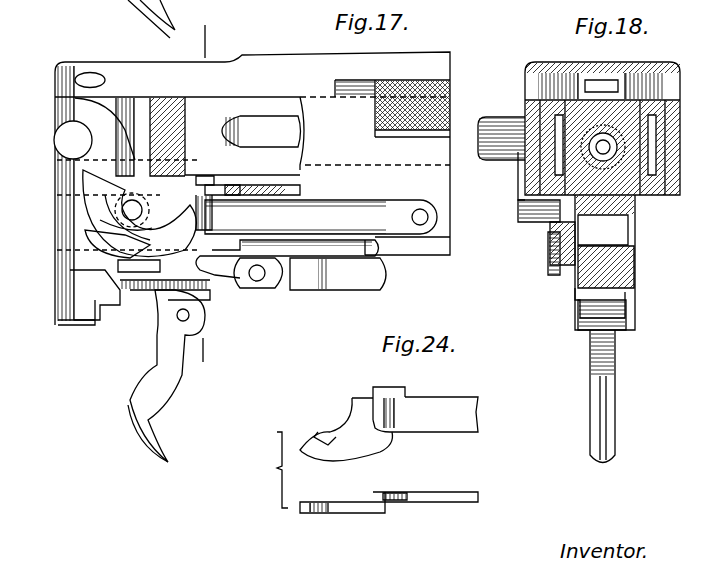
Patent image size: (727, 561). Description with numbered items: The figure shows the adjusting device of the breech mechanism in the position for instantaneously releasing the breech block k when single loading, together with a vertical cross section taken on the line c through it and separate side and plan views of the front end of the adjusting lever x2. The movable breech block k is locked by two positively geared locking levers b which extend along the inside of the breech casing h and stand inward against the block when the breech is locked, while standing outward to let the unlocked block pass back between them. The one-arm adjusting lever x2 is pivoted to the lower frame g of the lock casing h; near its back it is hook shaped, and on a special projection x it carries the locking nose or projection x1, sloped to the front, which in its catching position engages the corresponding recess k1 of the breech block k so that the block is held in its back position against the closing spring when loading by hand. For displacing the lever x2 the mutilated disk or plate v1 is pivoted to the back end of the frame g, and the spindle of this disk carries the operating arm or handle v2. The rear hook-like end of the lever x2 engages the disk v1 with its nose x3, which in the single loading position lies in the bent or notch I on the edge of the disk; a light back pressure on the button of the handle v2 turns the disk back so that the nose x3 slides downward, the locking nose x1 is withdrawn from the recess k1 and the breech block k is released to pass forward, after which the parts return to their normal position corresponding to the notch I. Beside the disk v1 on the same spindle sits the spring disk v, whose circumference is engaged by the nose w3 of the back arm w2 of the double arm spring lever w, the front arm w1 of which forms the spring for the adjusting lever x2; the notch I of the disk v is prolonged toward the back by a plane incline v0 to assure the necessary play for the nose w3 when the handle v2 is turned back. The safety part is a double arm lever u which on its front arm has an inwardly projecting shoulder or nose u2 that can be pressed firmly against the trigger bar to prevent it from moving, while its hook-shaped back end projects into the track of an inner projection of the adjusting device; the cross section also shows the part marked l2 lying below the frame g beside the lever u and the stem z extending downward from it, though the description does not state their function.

In FIG. 17, the section line c is at (212, 193).
In FIG. 17, the operating arm or handle v2 is at (56, 146).
In FIG. 18, the operating arm or handle v2 is at (518, 165).
In FIG. 17, the breech block k is at (248, 131).
In FIG. 18, the breech block k is at (635, 165).
In FIG. 17, the recess of the breech block k1 is at (210, 174).
In FIG. 18, the recess of the breech block k1 is at (540, 188).
In FIG. 17, the locking nose or projection x1 is at (218, 190).
In FIG. 18, the locking nose or projection x1 is at (540, 212).
In FIG. 24, the locking nose or projection x1 is at (385, 388).
In FIG. 17, the breech casing h is at (373, 154).
In FIG. 18, the breech casing h is at (672, 145).
In FIG. 17, the mutilated disk or plate v1 is at (108, 228).
In FIG. 17, the bent or notch I is at (132, 210).
In FIG. 17, the special projection of the lever x is at (212, 200).
In FIG. 17, the front arm of the spring lever w1 is at (340, 240).
In FIG. 17, the plane incline v0 is at (130, 255).
In FIG. 17, the double arm spring lever w is at (287, 256).
In FIG. 17, the nose of the hook-like end of the lever x3 is at (140, 265).
In FIG. 24, the nose of the hook-like end of the lever x3 is at (314, 436).
In FIG. 17, the double arm lever u is at (95, 278).
In FIG. 18, the double arm lever u is at (578, 286).
In FIG. 17, the back arm of the spring lever w2 is at (238, 280).
In FIG. 17, the lower frame g is at (408, 248).
In FIG. 18, the lower frame g is at (635, 232).
In FIG. 17, the nose of the spring lever w3 is at (125, 300).
In FIG. 17, the spring disk v is at (118, 280).
In FIG. 18, the spring disk v is at (550, 265).
In FIG. 17, the trigger stem z is at (138, 398).
In FIG. 18, the trigger stem z is at (610, 372).
In FIG. 18, the locking lever b is at (545, 122).
In FIG. 18, the adjusting lever x2 is at (552, 230).
In FIG. 24, the adjusting lever x2 is at (443, 425).
In FIG. 18, the trigger block l2 is at (635, 268).
In FIG. 18, the shoulder or nose of the front arm u2 is at (580, 310).